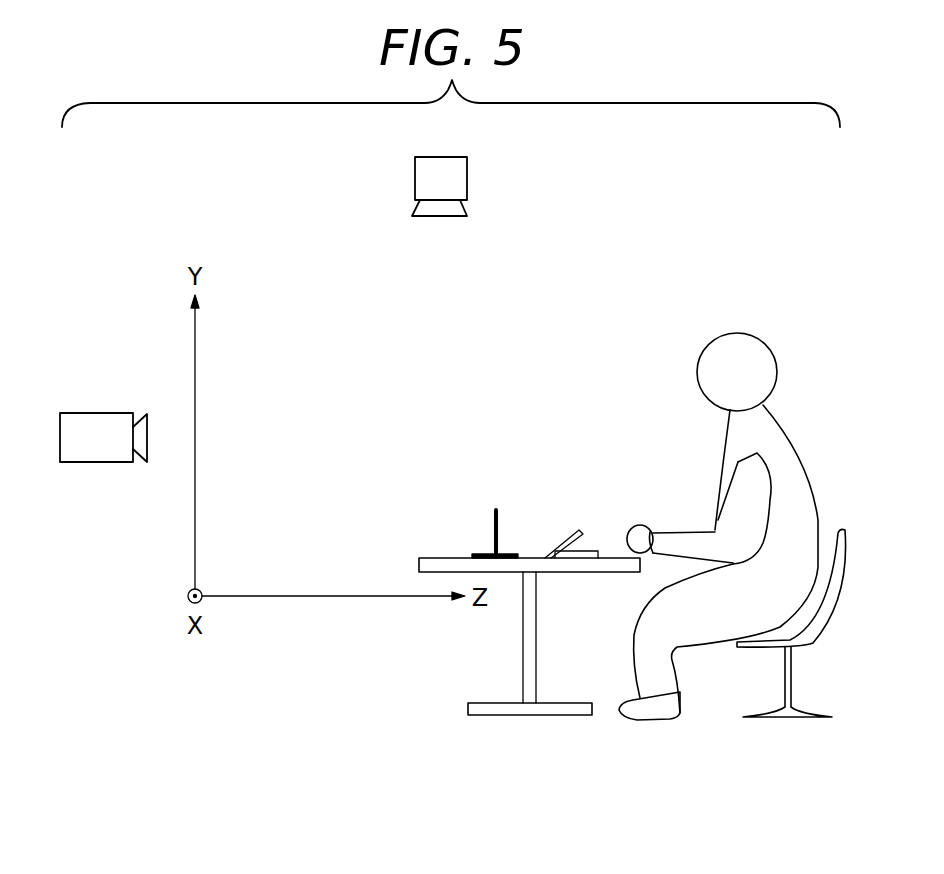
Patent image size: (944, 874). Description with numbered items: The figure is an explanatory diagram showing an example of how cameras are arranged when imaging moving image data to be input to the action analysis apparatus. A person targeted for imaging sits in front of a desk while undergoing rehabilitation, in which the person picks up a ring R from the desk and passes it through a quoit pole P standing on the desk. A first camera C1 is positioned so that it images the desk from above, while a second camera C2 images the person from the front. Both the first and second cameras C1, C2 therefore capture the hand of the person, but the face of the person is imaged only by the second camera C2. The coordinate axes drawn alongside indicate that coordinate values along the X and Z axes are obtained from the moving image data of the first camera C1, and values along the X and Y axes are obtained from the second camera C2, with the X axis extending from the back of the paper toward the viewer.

The first camera C1 is at (482, 180).
The second camera C2 is at (100, 477).
The quoit pole P is at (496, 497).
The ring R is at (575, 517).